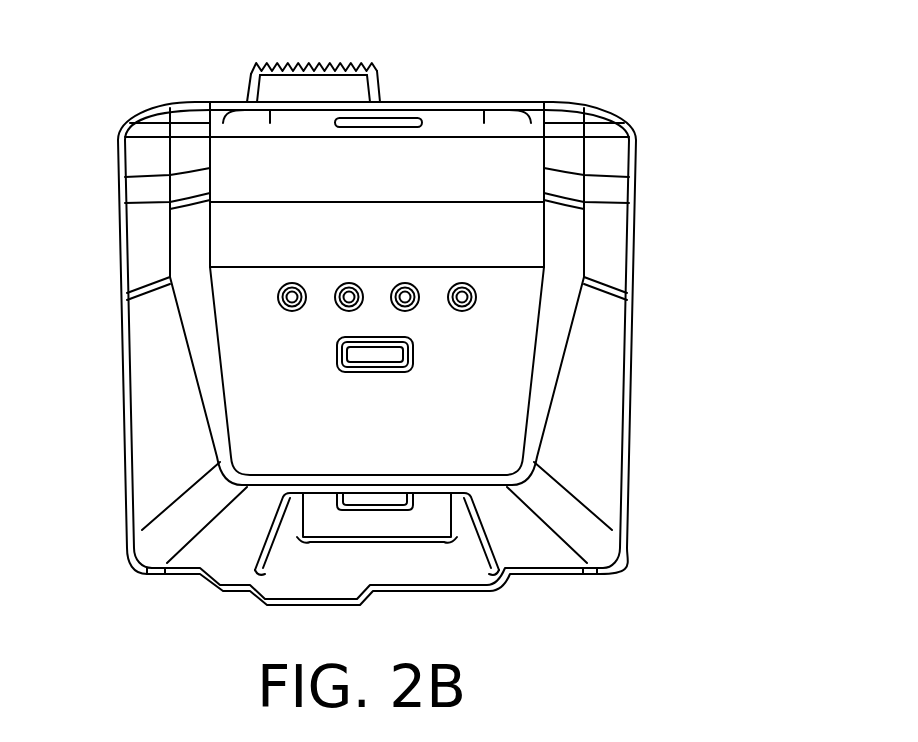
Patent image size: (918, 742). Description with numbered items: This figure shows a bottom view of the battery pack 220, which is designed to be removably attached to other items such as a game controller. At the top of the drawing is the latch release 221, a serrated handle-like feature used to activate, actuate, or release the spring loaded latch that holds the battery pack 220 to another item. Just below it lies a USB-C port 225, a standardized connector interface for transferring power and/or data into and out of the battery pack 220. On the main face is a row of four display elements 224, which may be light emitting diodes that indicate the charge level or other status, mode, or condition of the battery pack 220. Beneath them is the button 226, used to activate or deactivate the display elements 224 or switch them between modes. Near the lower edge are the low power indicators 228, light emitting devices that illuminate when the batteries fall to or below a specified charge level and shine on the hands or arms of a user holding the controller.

The battery pack 220 is at (673, 83).
The latch release 221 is at (283, 65).
The display elements 224 is at (278, 297).
The USB-C port 225 is at (401, 120).
The button 226 is at (337, 354).
The low power indicators 228 is at (381, 500).